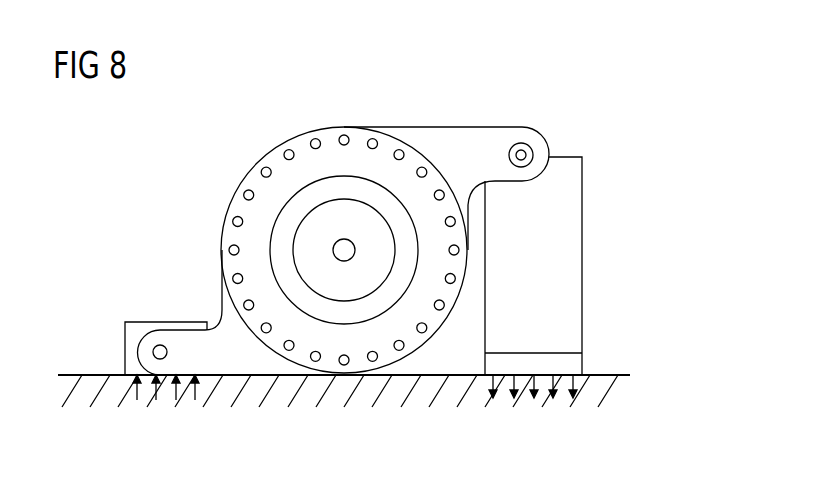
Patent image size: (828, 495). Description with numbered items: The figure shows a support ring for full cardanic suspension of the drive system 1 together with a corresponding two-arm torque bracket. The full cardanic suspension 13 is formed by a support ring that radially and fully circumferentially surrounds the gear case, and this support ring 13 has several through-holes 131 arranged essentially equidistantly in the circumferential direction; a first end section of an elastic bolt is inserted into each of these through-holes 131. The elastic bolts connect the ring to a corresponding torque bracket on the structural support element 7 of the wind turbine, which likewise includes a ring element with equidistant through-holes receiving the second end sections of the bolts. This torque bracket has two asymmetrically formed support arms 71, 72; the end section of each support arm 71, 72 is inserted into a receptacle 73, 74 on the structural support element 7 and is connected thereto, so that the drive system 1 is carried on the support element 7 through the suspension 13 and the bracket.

The electric machine 1 is at (344, 260).
The structural support element 7 is at (616, 374).
The full cardanic suspension 13 is at (358, 373).
The through-holes 131 is at (315, 138).
The support arm 71 is at (175, 330).
The support arm 72 is at (498, 127).
The receptacle 73 is at (143, 352).
The receptacle 74 is at (582, 235).